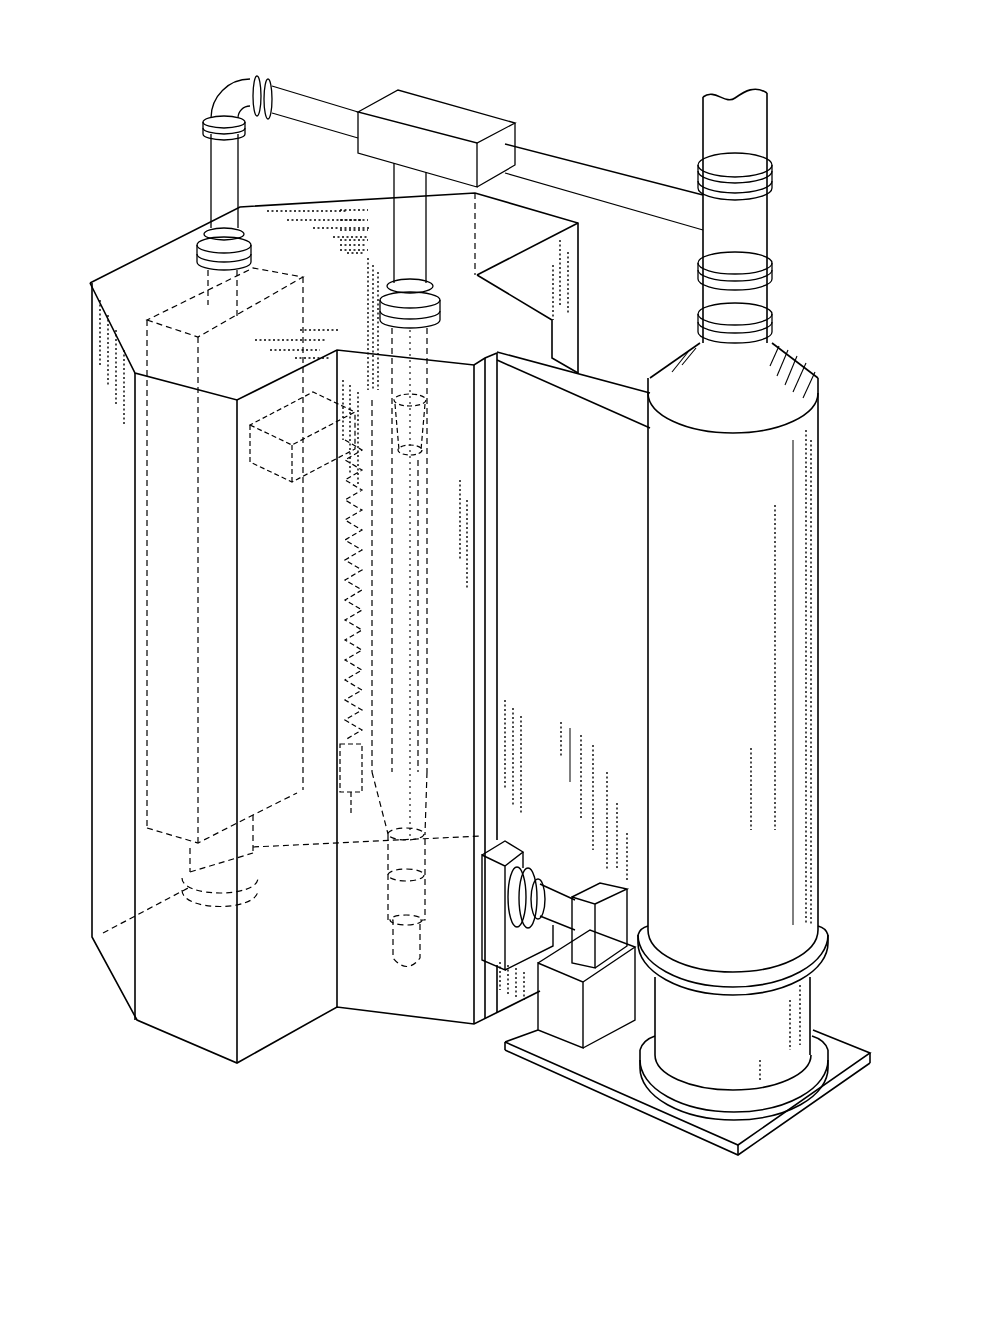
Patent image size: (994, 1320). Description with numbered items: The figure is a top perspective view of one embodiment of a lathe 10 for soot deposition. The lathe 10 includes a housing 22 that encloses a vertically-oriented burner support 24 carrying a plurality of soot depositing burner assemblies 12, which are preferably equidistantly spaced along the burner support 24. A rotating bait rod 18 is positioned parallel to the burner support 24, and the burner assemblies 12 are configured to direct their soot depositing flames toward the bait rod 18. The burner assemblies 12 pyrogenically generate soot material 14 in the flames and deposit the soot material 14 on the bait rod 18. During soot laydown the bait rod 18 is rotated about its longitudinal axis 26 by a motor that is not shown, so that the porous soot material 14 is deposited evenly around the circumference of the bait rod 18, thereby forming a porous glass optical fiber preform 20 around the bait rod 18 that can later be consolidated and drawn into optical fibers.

The lathe 10 is at (560, 86).
The soot depositing burner assemblies 12 is at (360, 465).
The soot material 14 is at (416, 731).
The bait rod 18 is at (413, 422).
The porous glass optical fiber preform 20 is at (427, 543).
The housing 22 is at (133, 738).
The burner support 24 is at (349, 740).
The longitudinal axis 26 is at (407, 351).